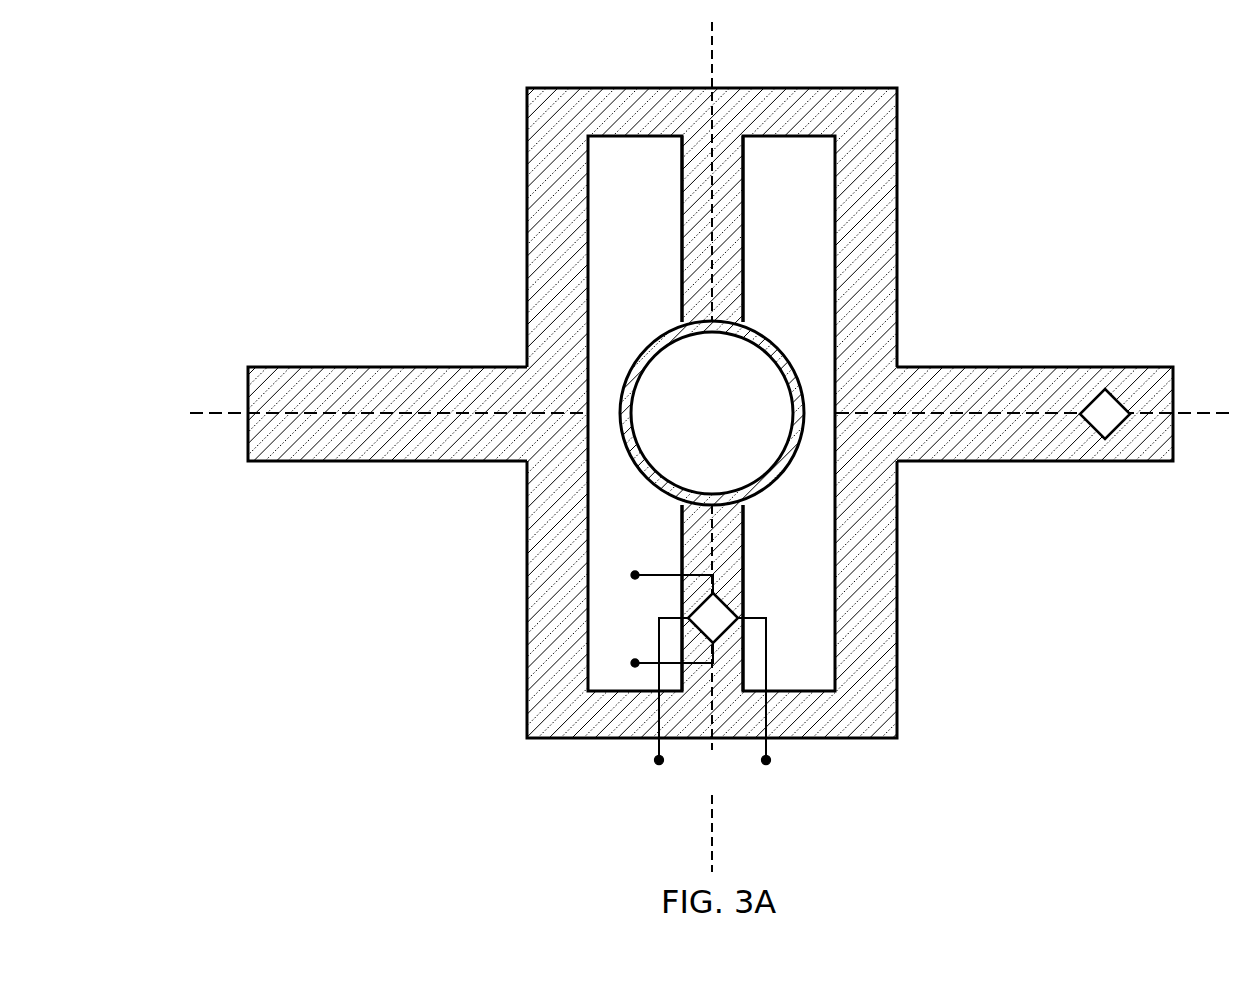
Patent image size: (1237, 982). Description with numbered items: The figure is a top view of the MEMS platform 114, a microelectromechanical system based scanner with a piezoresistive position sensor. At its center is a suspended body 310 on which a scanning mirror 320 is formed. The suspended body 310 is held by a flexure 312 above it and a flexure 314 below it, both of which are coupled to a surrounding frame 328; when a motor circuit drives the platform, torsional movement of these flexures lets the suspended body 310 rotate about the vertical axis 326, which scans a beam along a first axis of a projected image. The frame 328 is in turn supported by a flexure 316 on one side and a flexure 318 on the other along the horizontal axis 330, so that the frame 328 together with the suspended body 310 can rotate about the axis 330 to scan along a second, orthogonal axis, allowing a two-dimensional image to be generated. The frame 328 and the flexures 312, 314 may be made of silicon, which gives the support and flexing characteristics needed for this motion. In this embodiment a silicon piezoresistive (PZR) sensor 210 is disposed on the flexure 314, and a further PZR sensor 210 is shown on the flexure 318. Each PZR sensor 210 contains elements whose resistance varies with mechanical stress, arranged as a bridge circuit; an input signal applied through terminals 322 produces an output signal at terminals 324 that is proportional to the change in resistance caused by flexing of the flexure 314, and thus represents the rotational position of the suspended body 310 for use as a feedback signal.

The MEMS platform 114 is at (345, 138).
The piezoresistive (PZR) sensor 210 is at (1118, 393).
The suspended body 310 is at (768, 340).
The flexure 312 is at (743, 240).
The flexure 314 is at (743, 555).
The flexure 316 is at (347, 367).
The flexure 318 is at (1070, 367).
The scanning mirror 320 is at (695, 427).
The terminals 322 is at (650, 574).
The terminals 324 is at (766, 748).
The axis 326 is at (712, 58).
The frame 328 is at (898, 140).
The axis 330 is at (423, 413).